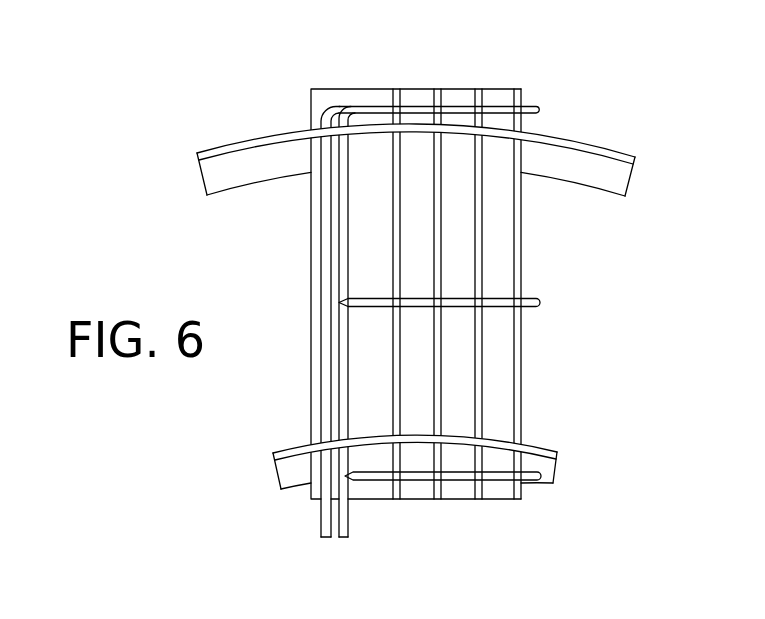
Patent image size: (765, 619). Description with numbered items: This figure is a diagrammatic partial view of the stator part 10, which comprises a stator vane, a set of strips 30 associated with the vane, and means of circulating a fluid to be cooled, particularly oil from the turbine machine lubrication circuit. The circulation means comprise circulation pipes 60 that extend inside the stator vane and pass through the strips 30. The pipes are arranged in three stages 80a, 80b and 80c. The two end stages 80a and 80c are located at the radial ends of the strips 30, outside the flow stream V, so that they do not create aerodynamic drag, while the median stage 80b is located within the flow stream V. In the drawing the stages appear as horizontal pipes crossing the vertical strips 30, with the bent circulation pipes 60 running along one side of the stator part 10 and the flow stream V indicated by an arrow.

The stator part 10 is at (262, 87).
The strips 30 is at (393, 140).
The circulation pipes 60 is at (327, 232).
The stage of pipes 80a is at (534, 106).
The median stage of pipes 80b is at (533, 297).
The stage of pipes 80c is at (540, 483).
The flow stream V is at (601, 232).